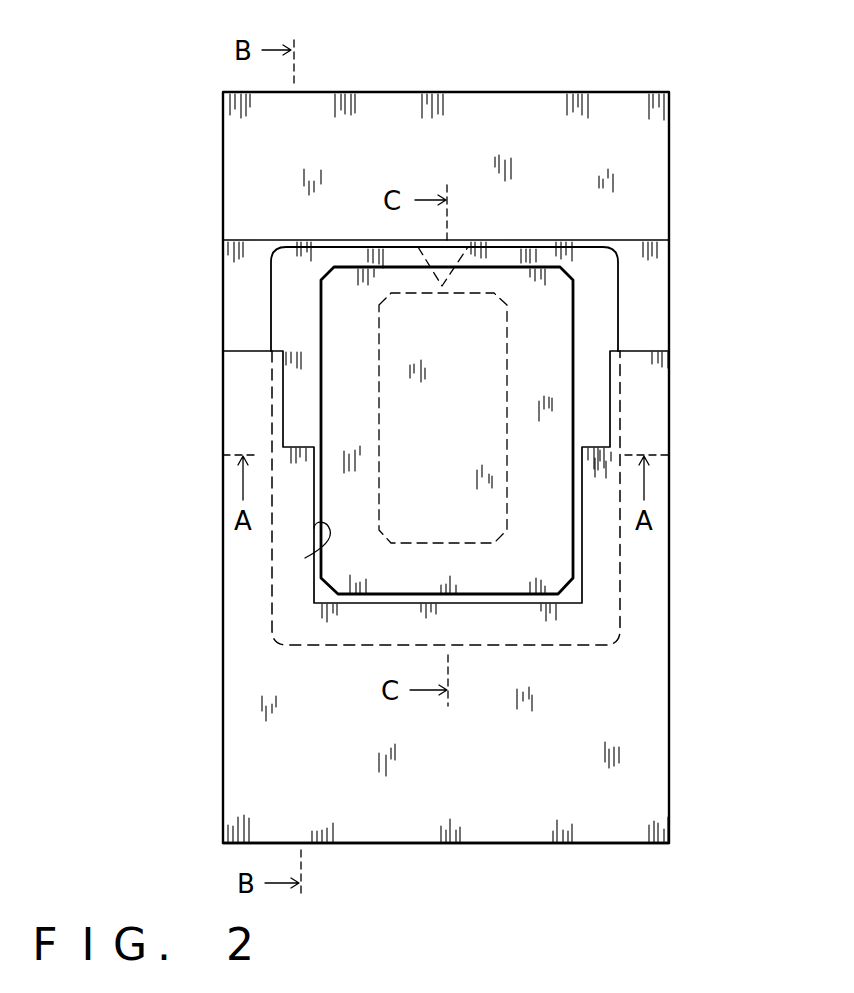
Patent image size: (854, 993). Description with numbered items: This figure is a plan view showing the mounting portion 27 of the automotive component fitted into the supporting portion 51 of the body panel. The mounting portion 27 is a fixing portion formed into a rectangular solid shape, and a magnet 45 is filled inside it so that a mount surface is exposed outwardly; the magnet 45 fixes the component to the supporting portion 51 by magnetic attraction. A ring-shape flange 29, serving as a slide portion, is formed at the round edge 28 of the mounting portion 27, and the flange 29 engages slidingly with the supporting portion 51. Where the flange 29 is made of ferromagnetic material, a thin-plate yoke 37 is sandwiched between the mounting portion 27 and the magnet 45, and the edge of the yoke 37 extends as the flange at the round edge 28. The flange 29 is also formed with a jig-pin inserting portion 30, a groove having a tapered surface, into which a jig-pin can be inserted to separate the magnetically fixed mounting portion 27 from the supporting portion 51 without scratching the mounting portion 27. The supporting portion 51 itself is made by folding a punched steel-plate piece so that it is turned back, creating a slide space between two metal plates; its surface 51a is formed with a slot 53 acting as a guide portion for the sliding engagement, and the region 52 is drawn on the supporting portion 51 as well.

The mounting portion 27 is at (350, 290).
The round edge 28 is at (495, 260).
The flange 29 is at (547, 240).
The jig-pin inserting portion 30 is at (452, 270).
The yoke 37 is at (594, 258).
The magnet 45 is at (507, 340).
The supporting portion 51 is at (672, 766).
The surface 51a is at (417, 812).
The surface 52 is at (630, 691).
The slot 53 is at (305, 558).